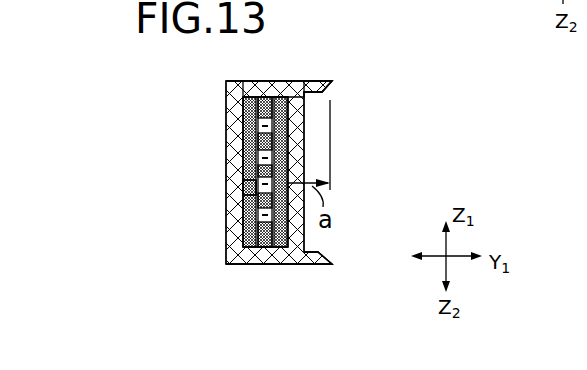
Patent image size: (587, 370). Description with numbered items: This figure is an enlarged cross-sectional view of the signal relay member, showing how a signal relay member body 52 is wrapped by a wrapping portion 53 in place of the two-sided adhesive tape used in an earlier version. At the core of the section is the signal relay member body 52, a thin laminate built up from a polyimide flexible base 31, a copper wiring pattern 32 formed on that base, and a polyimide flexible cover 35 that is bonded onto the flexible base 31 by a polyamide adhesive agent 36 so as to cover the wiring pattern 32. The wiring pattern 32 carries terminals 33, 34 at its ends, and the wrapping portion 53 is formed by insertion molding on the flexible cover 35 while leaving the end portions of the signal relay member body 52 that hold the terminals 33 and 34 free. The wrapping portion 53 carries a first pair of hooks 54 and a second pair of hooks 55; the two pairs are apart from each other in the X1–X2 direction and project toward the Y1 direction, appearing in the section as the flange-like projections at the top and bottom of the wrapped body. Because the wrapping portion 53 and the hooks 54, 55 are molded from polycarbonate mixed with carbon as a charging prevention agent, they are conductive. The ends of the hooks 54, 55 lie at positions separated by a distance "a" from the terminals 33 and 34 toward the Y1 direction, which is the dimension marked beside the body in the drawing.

The flexible base 31 is at (248, 170).
The wiring pattern 32 is at (260, 123).
The terminal 33 is at (246, 188).
The terminal 34 is at (200, 211).
The flexible cover 35 is at (284, 147).
The adhesive agent 36 is at (234, 91).
The signal relay member body 52 is at (242, 238).
The wrapping portion 53 is at (240, 262).
The first pair of hooks 54 is at (318, 86).
The second pair of hooks 55 is at (320, 80).